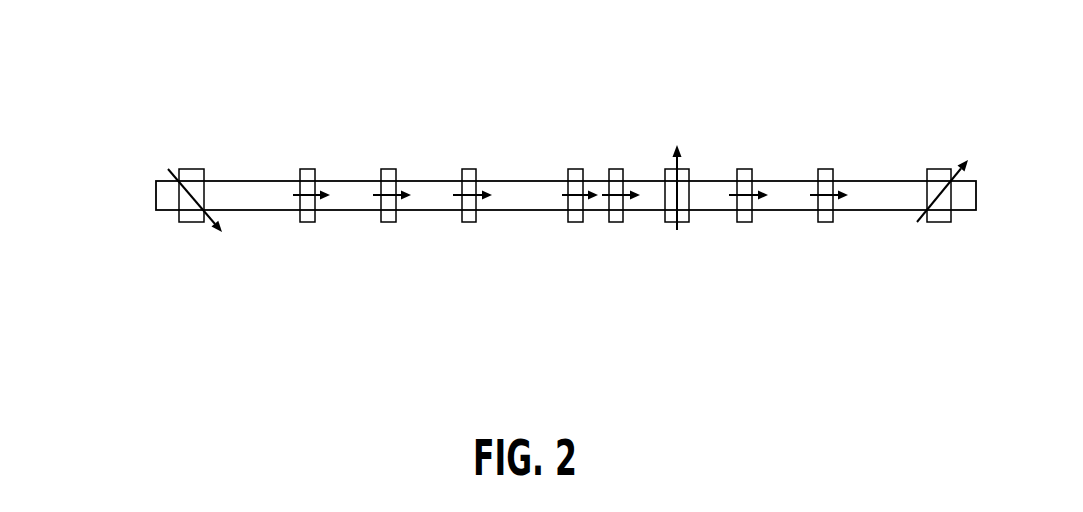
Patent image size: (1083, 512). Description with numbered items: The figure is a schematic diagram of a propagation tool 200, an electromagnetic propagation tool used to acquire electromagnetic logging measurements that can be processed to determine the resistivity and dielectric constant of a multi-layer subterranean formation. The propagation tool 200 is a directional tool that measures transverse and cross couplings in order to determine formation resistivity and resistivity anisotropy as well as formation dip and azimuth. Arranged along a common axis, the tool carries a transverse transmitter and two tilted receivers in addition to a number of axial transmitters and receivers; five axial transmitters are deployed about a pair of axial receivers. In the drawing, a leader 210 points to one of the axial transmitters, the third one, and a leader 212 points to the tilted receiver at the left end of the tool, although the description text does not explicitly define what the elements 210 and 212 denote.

The propagation tool 200 is at (321, 92).
The transmitter (T3) 210 is at (390, 260).
The receiver (R3) 212 is at (195, 258).